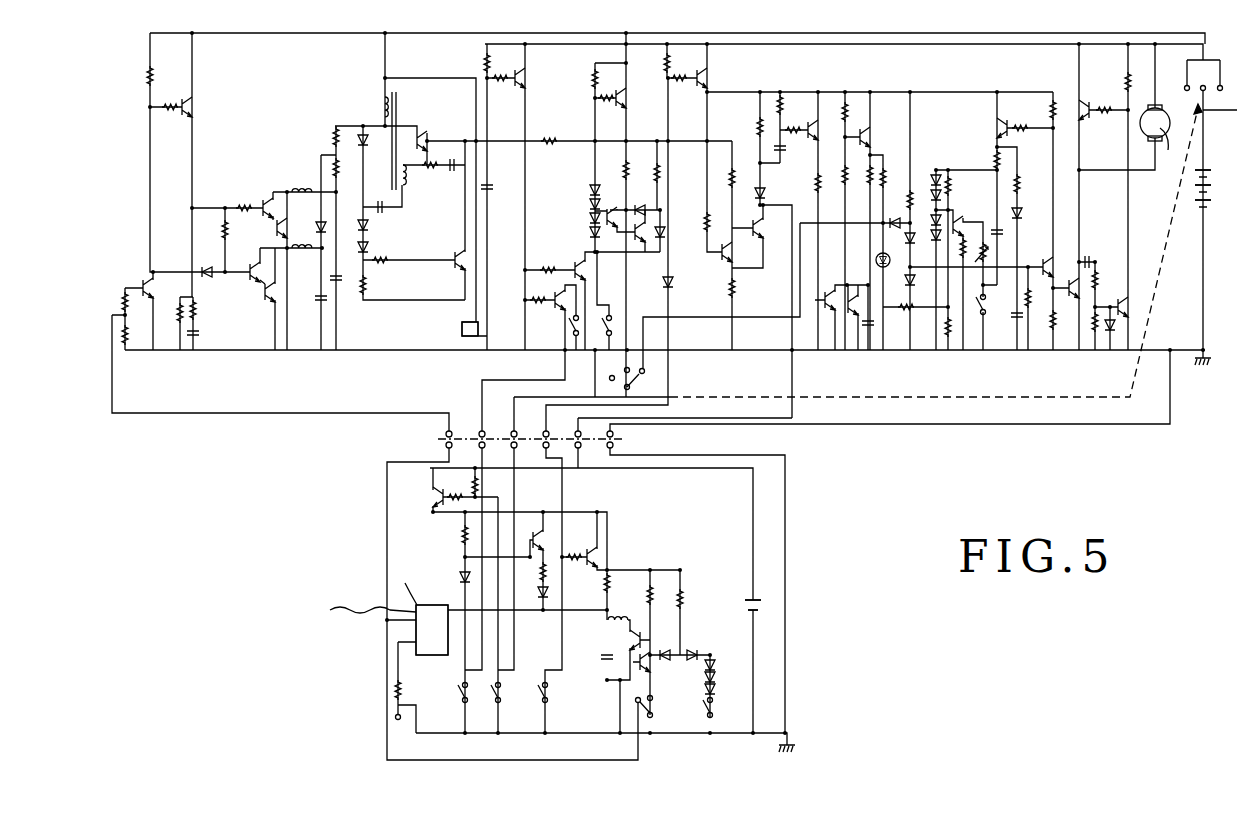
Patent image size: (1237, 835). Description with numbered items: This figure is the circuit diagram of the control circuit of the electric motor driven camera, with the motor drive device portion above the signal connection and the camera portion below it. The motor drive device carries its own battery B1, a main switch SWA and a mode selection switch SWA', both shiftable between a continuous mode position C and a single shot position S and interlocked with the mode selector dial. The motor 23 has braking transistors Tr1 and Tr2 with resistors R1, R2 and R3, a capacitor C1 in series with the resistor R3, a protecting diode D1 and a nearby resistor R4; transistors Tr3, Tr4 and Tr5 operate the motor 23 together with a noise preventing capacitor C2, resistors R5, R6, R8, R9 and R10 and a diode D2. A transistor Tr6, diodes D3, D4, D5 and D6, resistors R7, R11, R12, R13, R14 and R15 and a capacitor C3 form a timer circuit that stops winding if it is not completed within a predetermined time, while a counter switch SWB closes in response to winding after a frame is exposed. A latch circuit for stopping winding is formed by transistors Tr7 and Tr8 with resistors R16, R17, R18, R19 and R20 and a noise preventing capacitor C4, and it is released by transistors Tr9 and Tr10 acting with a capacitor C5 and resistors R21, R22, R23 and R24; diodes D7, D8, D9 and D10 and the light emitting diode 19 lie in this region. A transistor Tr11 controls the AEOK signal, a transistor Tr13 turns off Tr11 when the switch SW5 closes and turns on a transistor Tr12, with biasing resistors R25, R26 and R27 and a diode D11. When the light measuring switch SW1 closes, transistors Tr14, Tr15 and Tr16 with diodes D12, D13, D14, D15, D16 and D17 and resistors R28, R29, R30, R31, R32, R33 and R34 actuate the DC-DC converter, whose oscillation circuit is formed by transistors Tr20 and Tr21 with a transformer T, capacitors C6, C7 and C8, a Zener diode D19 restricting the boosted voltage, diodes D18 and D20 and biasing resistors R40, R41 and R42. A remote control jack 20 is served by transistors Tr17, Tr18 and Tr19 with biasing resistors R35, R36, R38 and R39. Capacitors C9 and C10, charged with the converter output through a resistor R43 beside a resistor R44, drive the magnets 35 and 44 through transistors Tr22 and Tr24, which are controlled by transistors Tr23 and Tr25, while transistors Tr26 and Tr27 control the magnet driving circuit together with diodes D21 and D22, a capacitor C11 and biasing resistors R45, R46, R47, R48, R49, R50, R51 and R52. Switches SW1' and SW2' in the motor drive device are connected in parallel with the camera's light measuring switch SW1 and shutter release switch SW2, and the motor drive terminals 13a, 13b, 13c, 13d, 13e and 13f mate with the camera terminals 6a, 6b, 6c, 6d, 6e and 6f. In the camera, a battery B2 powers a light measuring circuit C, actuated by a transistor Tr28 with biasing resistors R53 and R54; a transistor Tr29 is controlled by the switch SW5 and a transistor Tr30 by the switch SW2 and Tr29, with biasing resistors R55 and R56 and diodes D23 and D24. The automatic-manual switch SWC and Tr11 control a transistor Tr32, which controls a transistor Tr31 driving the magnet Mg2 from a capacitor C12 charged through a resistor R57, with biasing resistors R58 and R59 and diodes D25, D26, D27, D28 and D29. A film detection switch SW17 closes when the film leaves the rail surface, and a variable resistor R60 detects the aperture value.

The biasing resistor R47 is at (138, 76).
The biasing resistor R48 is at (166, 98).
The transistor Tr26 is at (204, 107).
The biasing resistor R45 is at (232, 201).
The transistor Tr23 is at (258, 202).
The magnet 35 is at (302, 183).
The resistor R43 is at (323, 137).
The resistor R44 is at (349, 168).
The diode D18 is at (377, 141).
The transformer T is at (397, 137).
The transistor Tr20 is at (432, 134).
The capacitor C7 is at (448, 159).
The biasing resistor R40 is at (433, 173).
The capacitor C6 is at (495, 187).
The capacitor C8 is at (374, 202).
The biasing resistor R46 is at (213, 230).
The diode D22 is at (212, 264).
The transistor Tr22 is at (267, 231).
The diode D21 is at (311, 224).
The magnet 44 is at (302, 257).
The Zener diode D19 is at (377, 226).
The diode D20 is at (377, 248).
The biasing resistor R41 is at (385, 268).
The biasing resistor R42 is at (379, 286).
The transistor Tr21 is at (449, 251).
The capacitor C9 is at (344, 284).
The capacitor C10 is at (311, 304).
The transistor Tr25 is at (241, 278).
The transistor Tr24 is at (262, 302).
The transistor Tr27 is at (164, 286).
The biasing resistor R51 is at (113, 301).
The biasing resistor R50 is at (173, 313).
The biasing resistor R49 is at (206, 310).
The biasing resistor R52 is at (138, 336).
The capacitor C11 is at (205, 338).
The remote control jack 20 is at (466, 336).
The biasing resistor R38 is at (474, 63).
The transistor Tr19 is at (534, 78).
The biasing resistor R39 is at (505, 88).
The resistor R32 is at (582, 79).
The resistor R33 is at (610, 107).
The transistor Tr14 is at (637, 98).
The resistor R34 is at (549, 133).
The resistor R29 is at (655, 63).
The transistor Tr12 is at (718, 78).
The resistor R28 is at (683, 88).
The diode D14 is at (581, 191).
The diode D15 is at (581, 205).
The diode D16 is at (581, 219).
The diode D17 is at (581, 233).
The resistor R31 is at (615, 167).
The resistor R30 is at (674, 173).
The diode D12 is at (650, 200).
The diode D13 is at (676, 233).
The transistor Tr15 is at (614, 228).
The transistor Tr16 is at (642, 231).
The transistor Tr17 is at (600, 270).
The biasing resistor R35 is at (550, 262).
The biasing resistor R36 is at (540, 292).
The transistor Tr18 is at (549, 307).
The switch SW1' is at (614, 312).
The switch SW2' is at (584, 341).
The mode selection switch SWA' is at (633, 370).
The diode D11 is at (684, 282).
The biasing resistor R27 is at (696, 216).
The transistor Tr13 is at (715, 255).
The transistor Tr11 is at (774, 228).
The biasing resistor R26 is at (746, 288).
The resistor R24 is at (748, 127).
The biasing resistor R25 is at (746, 178).
The diode D10 is at (775, 195).
The resistor R22 is at (794, 103).
The resistor R23 is at (798, 121).
The capacitor C5 is at (788, 149).
The transistor Tr9 is at (825, 130).
The resistor R21 is at (809, 182).
The resistor R19 is at (835, 112).
The transistor Tr7 is at (878, 137).
The resistor R20 is at (837, 173).
The resistor R18 is at (862, 173).
The resistor R17 is at (896, 178).
The resistor R16 is at (899, 202).
The diode D7 is at (895, 231).
The light emitting diode 19 is at (888, 270).
The diode D8 is at (919, 244).
The diode D9 is at (920, 284).
The resistor R15 is at (901, 314).
The diode D3 is at (929, 180).
The diode D4 is at (929, 195).
The diode D5 is at (929, 218).
The diode D6 is at (950, 238).
The resistor R13 is at (961, 186).
The transistor Tr6 is at (966, 218).
The resistor R12 is at (965, 250).
The resistor R11 is at (970, 261).
The capacitor C3 is at (1004, 241).
The resistor R14 is at (961, 329).
The counter switch SWB is at (998, 302).
The noise preventing capacitor C2 is at (1011, 325).
The resistor R7 is at (989, 160).
The resistor R8 is at (1027, 184).
The diode D2 is at (1026, 214).
The transistor Tr5 is at (989, 129).
The resistor R6 is at (1024, 136).
The resistor R5 is at (1044, 109).
The transistor Tr4 is at (1042, 260).
The resistor R10 is at (1041, 298).
The transistor Tr3 is at (1068, 281).
The resistor R9 is at (1062, 320).
The capacitor C1 is at (1091, 255).
The resistor R3 is at (1105, 280).
The resistor R4 is at (1095, 338).
The braking transistor Tr2 is at (1134, 307).
The diode D1 is at (1118, 333).
The braking transistor Tr1 is at (1090, 103).
The resistor R1 is at (1119, 80).
The resistor R2 is at (1106, 118).
The motor 23 is at (1161, 135).
The main switch SWA is at (1206, 69).
The battery B1 is at (1214, 185).
The transistor Tr10 is at (825, 306).
The transistor Tr8 is at (835, 318).
The noise preventing capacitor C4 is at (862, 334).
The signal terminal 13a is at (462, 428).
The signal terminal 6a is at (458, 452).
The signal terminal 13b is at (495, 428).
The signal terminal 6b is at (492, 452).
The signal terminal 13c is at (526, 428).
The signal terminal 6c is at (523, 452).
The signal terminal 13d is at (559, 428).
The signal terminal 6d is at (556, 452).
The signal terminal 13e is at (591, 428).
The signal terminal 6e is at (588, 452).
The signal terminal 13f is at (622, 428).
The signal terminal 6f is at (618, 452).
The transistor Tr28 is at (422, 497).
The biasing resistor R53 is at (457, 489).
The biasing resistor R54 is at (489, 486).
The biasing resistor R55 is at (453, 535).
The diode D23 is at (453, 579).
The transistor Tr29 is at (548, 533).
The transistor Tr30 is at (583, 551).
The biasing resistor R59 is at (614, 585).
The diode D24 is at (532, 595).
The biasing resistor R56 is at (578, 567).
The biasing resistor R57 is at (620, 583).
The magnet Mg2 is at (623, 606).
The capacitor C12 is at (596, 658).
The transistor Tr31 is at (625, 640).
The transistor Tr32 is at (660, 668).
The diode D25 is at (671, 648).
The diode D26 is at (699, 647).
The biasing resistor R58 is at (663, 592).
The diode D27 is at (726, 667).
The diode D28 is at (726, 680).
The diode D29 is at (726, 693).
The film detection switch SW17 is at (729, 712).
The automatic-manual selection switch SWC is at (655, 711).
The battery B2 is at (763, 608).
The variable resistor R60 is at (411, 694).
The shutter release switch SW2 is at (455, 703).
The light measuring switch SW1 is at (488, 703).
The switch SW5 is at (560, 693).
The light measuring circuit C is at (345, 613).